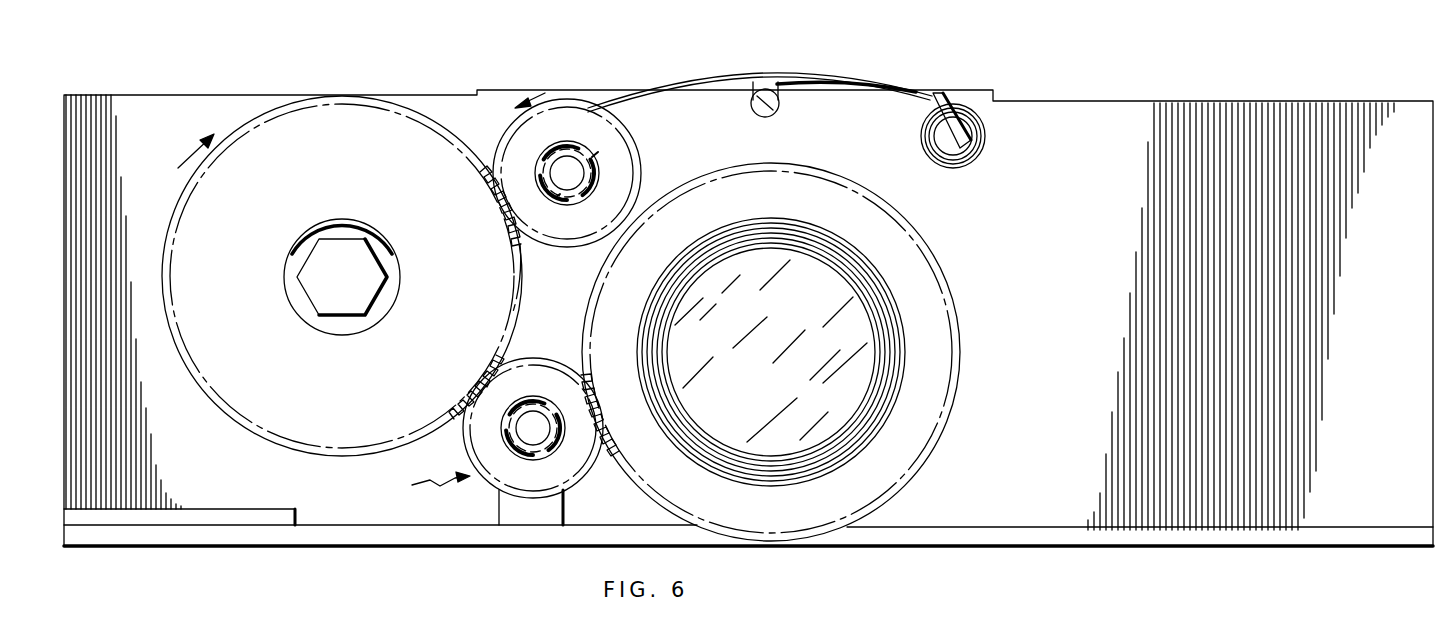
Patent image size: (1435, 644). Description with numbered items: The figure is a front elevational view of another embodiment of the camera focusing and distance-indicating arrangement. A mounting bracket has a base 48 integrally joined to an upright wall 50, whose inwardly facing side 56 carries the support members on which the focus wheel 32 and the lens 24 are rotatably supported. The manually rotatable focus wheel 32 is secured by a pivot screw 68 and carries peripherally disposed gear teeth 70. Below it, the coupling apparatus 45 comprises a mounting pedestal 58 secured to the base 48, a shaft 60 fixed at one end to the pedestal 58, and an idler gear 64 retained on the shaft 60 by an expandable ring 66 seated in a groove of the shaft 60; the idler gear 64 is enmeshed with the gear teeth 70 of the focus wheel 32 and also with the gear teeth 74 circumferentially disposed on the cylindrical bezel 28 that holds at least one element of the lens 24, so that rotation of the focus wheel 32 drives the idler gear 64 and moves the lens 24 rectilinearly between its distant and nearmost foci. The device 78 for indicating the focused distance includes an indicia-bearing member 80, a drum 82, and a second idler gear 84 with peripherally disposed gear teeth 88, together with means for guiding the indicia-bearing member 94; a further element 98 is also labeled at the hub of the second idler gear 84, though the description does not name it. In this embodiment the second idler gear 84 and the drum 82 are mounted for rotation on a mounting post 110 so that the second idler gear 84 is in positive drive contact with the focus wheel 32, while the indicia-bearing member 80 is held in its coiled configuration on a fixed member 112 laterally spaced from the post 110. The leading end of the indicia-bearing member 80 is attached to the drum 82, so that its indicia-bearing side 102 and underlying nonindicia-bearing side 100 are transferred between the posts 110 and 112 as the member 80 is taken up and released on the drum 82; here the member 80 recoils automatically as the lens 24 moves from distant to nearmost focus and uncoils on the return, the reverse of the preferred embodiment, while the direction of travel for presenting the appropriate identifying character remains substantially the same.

The lens 24 is at (868, 352).
The cylindrical bezel 28 is at (921, 438).
The focus wheel 32 is at (222, 384).
The coupling apparatus 45 is at (426, 484).
The base 48 is at (1016, 537).
The upright wall 50 is at (1432, 96).
The inwardly facing side 56 is at (1052, 311).
The mounting pedestal 58 is at (498, 512).
The shaft 60 is at (530, 433).
The idler gear 64 is at (509, 362).
The expandable ring 66 is at (510, 416).
The pivot screw 68 is at (348, 316).
The gear teeth 70 is at (521, 250).
The gear teeth 74 is at (615, 444).
The device 78 is at (868, 78).
The indicia-bearing member 80 is at (627, 93).
The drum 82 is at (563, 156).
The second idler gear 84 is at (638, 145).
The gear teeth 88 is at (512, 206).
The means for guiding the indicia-bearing member 94 is at (937, 113).
The pawl 98 is at (590, 176).
The nonindicia-bearing side 100 is at (663, 109).
The indicia-bearing side 102 is at (706, 86).
The mounting post 110 is at (584, 192).
The fixed member 112 is at (966, 132).